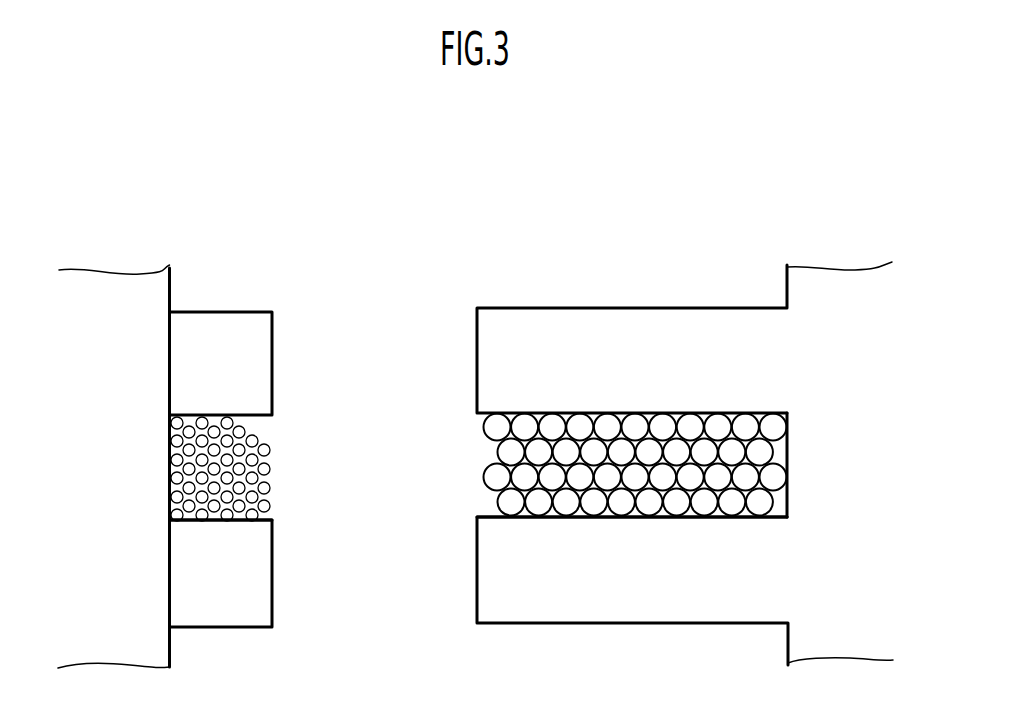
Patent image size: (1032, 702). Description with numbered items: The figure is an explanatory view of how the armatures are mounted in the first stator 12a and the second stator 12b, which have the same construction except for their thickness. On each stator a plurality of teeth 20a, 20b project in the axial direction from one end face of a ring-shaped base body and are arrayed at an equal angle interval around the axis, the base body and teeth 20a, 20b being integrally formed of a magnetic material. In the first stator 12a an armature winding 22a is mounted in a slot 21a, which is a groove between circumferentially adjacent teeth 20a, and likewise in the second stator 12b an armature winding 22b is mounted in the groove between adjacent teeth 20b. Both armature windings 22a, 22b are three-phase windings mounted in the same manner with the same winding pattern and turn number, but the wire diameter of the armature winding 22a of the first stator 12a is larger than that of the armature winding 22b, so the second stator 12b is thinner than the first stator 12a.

The second stator 12b is at (226, 238).
The first stator 12a is at (693, 228).
The teeth 20b is at (250, 339).
The teeth 20a is at (475, 320).
The armature winding 22b is at (273, 453).
The armature winding 22a is at (497, 450).
The slot 21a is at (263, 517).